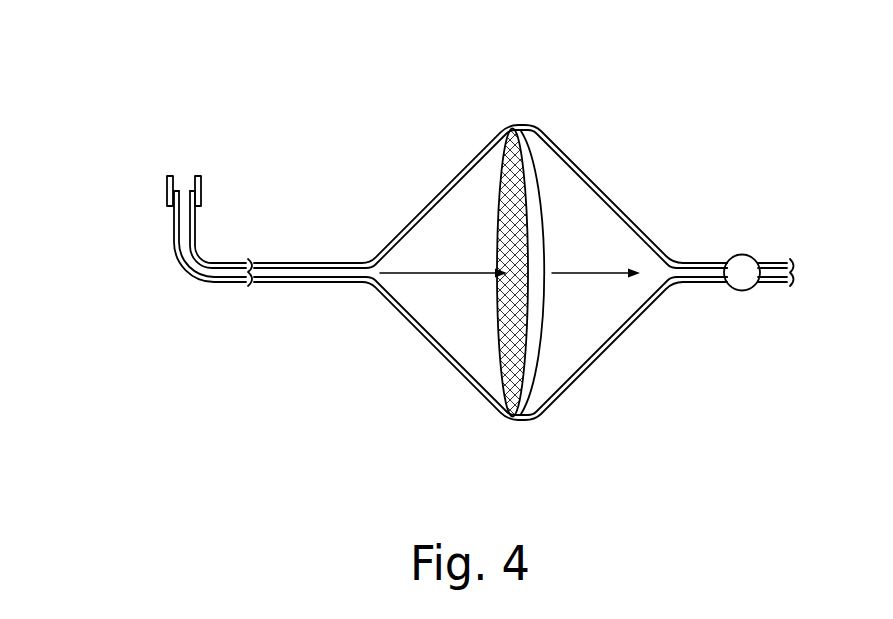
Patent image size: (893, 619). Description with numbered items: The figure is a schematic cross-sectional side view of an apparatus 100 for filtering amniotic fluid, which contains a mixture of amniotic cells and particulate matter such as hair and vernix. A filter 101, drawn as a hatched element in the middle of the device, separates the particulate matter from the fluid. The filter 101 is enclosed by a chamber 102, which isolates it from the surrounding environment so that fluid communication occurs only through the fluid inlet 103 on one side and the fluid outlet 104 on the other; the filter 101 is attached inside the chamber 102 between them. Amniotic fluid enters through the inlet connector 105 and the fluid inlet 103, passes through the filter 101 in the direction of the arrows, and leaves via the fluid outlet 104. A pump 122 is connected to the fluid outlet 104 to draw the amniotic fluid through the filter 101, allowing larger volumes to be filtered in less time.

The apparatus 100 is at (156, 72).
The filter 101 is at (508, 129).
The chamber 102 is at (452, 180).
The fluid inlet 103 is at (358, 270).
The fluid outlet 104 is at (693, 273).
The inlet connector 105 is at (187, 300).
The pump 122 is at (746, 290).